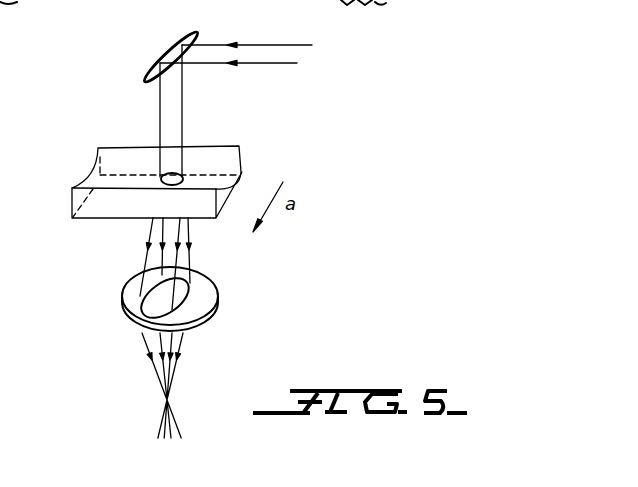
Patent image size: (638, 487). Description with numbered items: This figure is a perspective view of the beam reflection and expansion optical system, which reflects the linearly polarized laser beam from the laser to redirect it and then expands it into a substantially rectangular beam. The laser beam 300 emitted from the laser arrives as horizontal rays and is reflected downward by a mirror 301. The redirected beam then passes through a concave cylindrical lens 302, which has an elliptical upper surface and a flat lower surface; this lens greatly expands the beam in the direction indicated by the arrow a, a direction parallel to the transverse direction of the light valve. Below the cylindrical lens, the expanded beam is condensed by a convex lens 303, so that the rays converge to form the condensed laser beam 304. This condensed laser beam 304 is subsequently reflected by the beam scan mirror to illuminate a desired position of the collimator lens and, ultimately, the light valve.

The laser beam 300 is at (287, 45).
The mirror 301 is at (168, 47).
The concave cylindrical lens 302 is at (110, 147).
The convex lens 303 is at (122, 300).
The condensed laser beam 304 is at (155, 420).